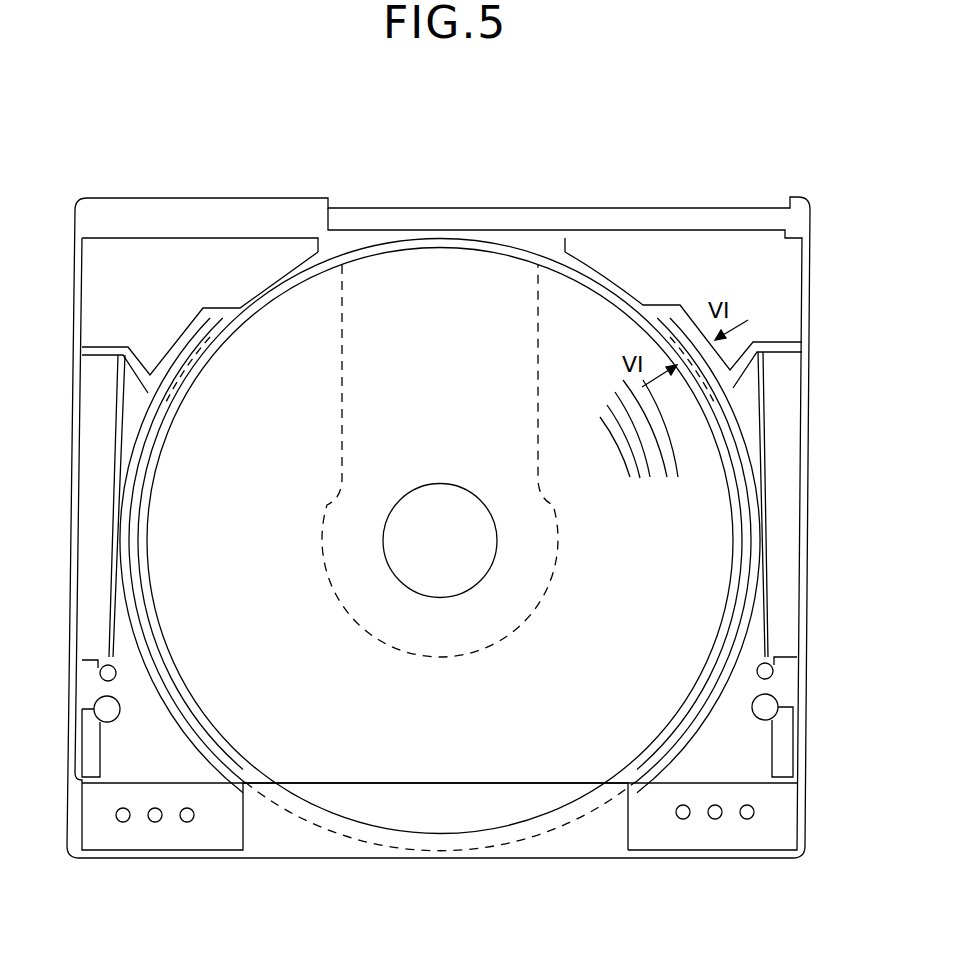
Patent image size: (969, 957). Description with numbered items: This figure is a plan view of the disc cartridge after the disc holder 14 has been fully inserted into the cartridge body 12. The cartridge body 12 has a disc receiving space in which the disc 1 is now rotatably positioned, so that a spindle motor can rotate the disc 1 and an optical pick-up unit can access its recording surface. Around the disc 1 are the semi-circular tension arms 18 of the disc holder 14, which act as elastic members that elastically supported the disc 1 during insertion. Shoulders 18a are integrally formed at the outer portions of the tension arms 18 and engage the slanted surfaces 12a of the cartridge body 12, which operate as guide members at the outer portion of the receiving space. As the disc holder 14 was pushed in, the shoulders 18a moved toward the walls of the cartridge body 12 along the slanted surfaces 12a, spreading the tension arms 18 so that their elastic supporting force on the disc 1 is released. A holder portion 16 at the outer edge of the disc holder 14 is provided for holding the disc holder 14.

The disc 1 is at (468, 262).
The cartridge body 12 is at (75, 286).
The slanted surfaces 12a is at (755, 344).
The disc holder 14 is at (716, 858).
The holder portion 16 is at (593, 850).
The tension arms 18 is at (740, 453).
The shoulders 18a is at (750, 398).